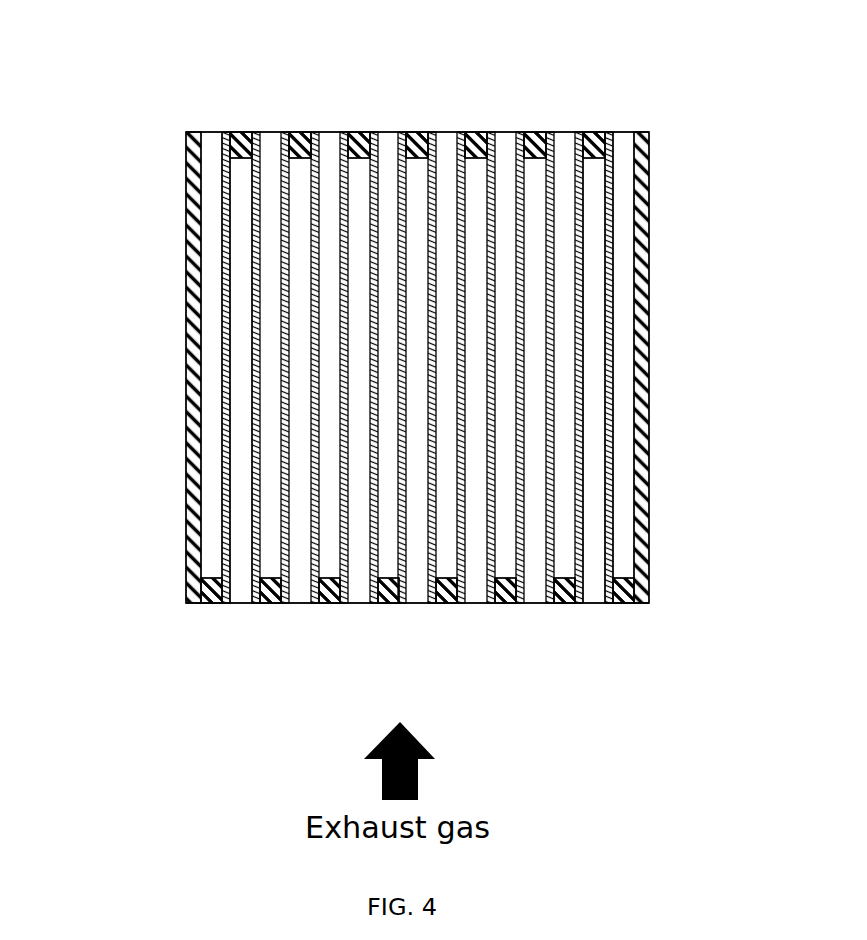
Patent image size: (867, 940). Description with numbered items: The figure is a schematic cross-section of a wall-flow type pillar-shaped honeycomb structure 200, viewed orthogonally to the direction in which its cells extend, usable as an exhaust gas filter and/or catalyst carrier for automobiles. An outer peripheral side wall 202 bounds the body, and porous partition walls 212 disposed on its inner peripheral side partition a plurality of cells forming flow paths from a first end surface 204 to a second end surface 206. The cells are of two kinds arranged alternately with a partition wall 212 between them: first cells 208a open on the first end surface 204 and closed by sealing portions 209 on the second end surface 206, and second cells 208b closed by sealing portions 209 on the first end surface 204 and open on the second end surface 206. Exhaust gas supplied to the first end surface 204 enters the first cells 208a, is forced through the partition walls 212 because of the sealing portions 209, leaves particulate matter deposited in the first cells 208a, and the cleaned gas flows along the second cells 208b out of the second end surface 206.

The pillar-shaped honeycomb structure 200 is at (392, 100).
The outer peripheral side wall 202 is at (185, 183).
The first end surface 204 is at (188, 605).
The second end surface 206 is at (192, 132).
The first cells 208a is at (243, 598).
The second cells 208b is at (272, 133).
The sealing portions 209 is at (595, 133).
The partition walls 212 is at (226, 311).